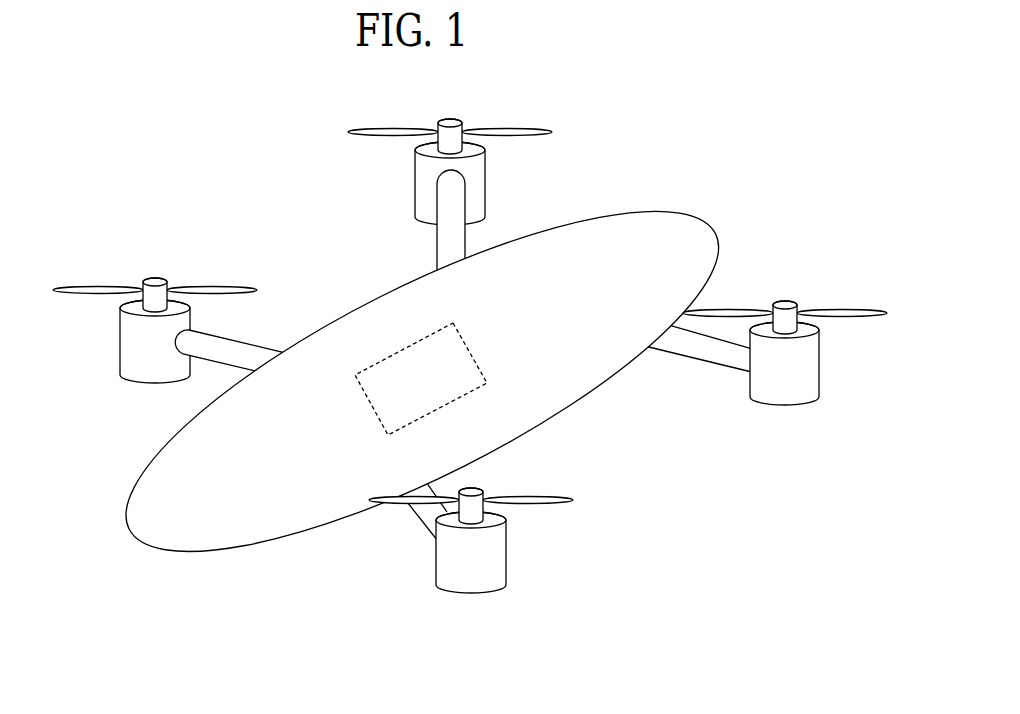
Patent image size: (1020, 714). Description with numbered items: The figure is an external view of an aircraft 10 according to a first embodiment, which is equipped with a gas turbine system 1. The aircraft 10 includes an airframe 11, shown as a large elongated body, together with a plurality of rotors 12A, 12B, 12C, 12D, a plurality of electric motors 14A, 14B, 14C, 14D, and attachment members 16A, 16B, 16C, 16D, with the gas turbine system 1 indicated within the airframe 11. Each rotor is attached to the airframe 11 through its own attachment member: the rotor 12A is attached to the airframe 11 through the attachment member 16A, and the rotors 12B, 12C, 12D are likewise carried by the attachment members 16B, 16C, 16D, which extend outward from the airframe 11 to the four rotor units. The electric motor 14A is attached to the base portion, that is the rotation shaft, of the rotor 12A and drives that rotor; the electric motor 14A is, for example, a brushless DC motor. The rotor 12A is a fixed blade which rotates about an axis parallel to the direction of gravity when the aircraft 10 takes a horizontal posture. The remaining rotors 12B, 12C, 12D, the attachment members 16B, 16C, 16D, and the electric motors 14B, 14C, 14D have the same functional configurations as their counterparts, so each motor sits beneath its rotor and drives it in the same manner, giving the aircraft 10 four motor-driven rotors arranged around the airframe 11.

The gas turbine system 1 is at (494, 345).
The aircraft 10 is at (727, 140).
The airframe 11 is at (165, 535).
The rotor 12A is at (208, 285).
The rotor 12B is at (505, 128).
The rotor 12C is at (538, 507).
The rotor 12D is at (852, 317).
The electric motor 14A is at (120, 337).
The electric motor 14B is at (415, 180).
The electric motor 14C is at (468, 592).
The electric motor 14D is at (783, 403).
The attachment member 16A is at (257, 347).
The attachment member 16B is at (437, 242).
The attachment member 16C is at (417, 523).
The attachment member 16D is at (703, 365).